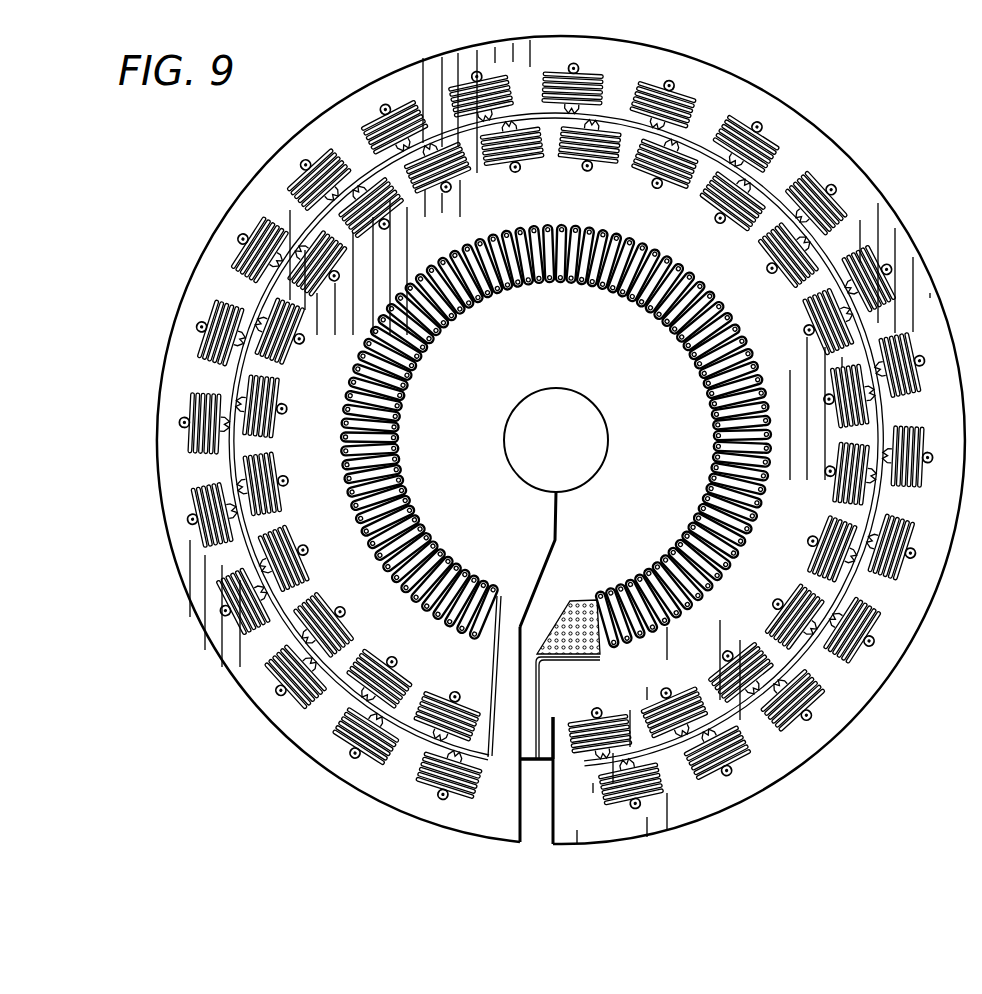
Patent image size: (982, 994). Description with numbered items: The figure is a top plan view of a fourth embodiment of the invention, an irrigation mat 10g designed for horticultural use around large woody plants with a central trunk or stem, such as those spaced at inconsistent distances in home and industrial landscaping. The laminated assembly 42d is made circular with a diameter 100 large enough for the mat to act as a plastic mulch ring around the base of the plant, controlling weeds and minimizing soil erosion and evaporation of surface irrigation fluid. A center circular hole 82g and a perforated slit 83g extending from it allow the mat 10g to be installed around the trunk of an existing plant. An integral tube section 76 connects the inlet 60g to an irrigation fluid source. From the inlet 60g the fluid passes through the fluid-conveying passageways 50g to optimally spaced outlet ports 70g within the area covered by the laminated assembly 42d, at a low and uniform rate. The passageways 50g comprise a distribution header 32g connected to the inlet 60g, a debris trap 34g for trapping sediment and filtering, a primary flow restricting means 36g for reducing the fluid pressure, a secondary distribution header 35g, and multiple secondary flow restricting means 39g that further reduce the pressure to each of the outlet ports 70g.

The diameter 100 is at (868, 182).
The mat 10g is at (722, 60).
The dielectric layer 42d is at (812, 127).
The center circular hole 82g is at (548, 389).
The perforated slit 83g is at (559, 518).
The primary flow restricting means 36g is at (440, 533).
The secondary distribution header 35g is at (283, 628).
The secondary flow restricting means 39g is at (300, 702).
The outlet ports 70g is at (353, 760).
The fluid-conveying passageways 50g is at (542, 157).
The debris trap 34g is at (597, 653).
The distribution header 32g is at (540, 712).
The inlet 60g is at (533, 760).
The integral tube section 76 is at (543, 752).